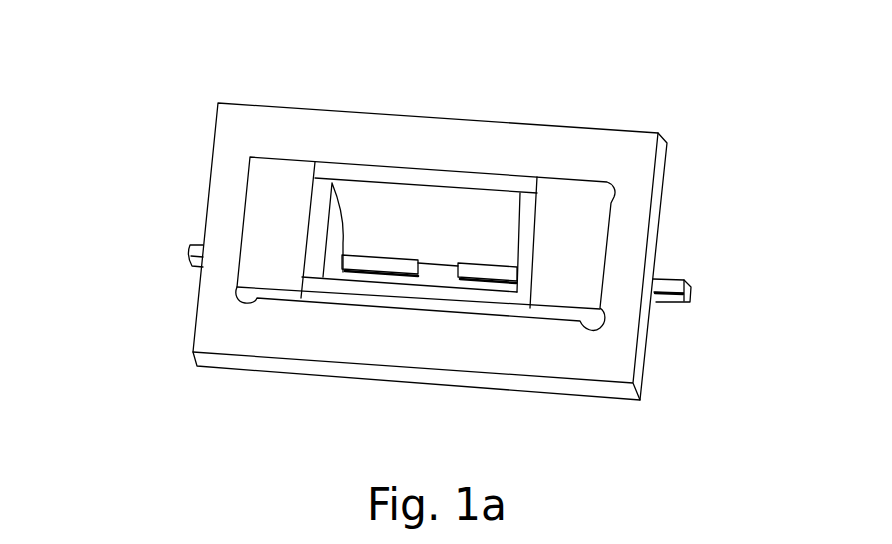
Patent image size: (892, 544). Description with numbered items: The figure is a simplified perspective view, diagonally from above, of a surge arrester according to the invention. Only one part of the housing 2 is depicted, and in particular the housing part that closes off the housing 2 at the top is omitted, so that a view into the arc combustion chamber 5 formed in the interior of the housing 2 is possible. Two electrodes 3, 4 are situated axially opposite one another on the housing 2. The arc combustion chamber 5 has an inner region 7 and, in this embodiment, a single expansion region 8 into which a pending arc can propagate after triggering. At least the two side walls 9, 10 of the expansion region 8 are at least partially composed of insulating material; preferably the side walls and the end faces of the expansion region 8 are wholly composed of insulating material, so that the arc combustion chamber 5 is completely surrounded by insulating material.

The housing 2 is at (637, 172).
The electrode 3 is at (668, 280).
The electrode 4 is at (189, 247).
The arc combustion chamber 5 is at (408, 167).
The inner region 7 is at (445, 237).
The expansion region 8 is at (385, 187).
The side wall 9 is at (387, 274).
The side wall 10 is at (495, 200).